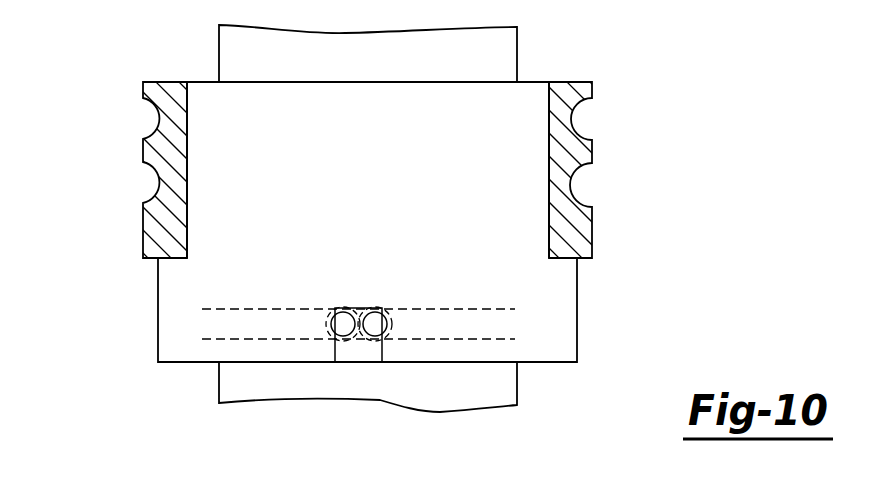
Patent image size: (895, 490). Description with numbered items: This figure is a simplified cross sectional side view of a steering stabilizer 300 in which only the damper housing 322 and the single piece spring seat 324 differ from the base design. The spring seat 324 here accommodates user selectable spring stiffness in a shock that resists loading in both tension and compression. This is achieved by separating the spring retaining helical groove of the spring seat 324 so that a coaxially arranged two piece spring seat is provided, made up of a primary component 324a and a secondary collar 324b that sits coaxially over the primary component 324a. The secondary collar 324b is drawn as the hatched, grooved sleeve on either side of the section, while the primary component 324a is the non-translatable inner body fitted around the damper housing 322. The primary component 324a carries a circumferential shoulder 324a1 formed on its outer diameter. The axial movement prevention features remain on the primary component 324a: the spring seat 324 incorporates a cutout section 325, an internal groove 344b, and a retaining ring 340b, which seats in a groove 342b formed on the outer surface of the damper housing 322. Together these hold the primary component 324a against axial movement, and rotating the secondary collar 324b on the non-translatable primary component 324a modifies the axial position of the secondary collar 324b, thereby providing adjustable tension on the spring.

The steering stabilizer 300 is at (148, 56).
The damper housing 322 is at (517, 58).
The single piece spring seat 324 is at (408, 245).
The primary component 324a is at (557, 325).
The circumferential shoulder 324a1 is at (572, 258).
The secondary collar 324b is at (575, 147).
The cutout section 325 is at (336, 349).
The retaining ring 340b is at (373, 318).
The groove 342b is at (362, 340).
The internal groove 344b is at (497, 309).